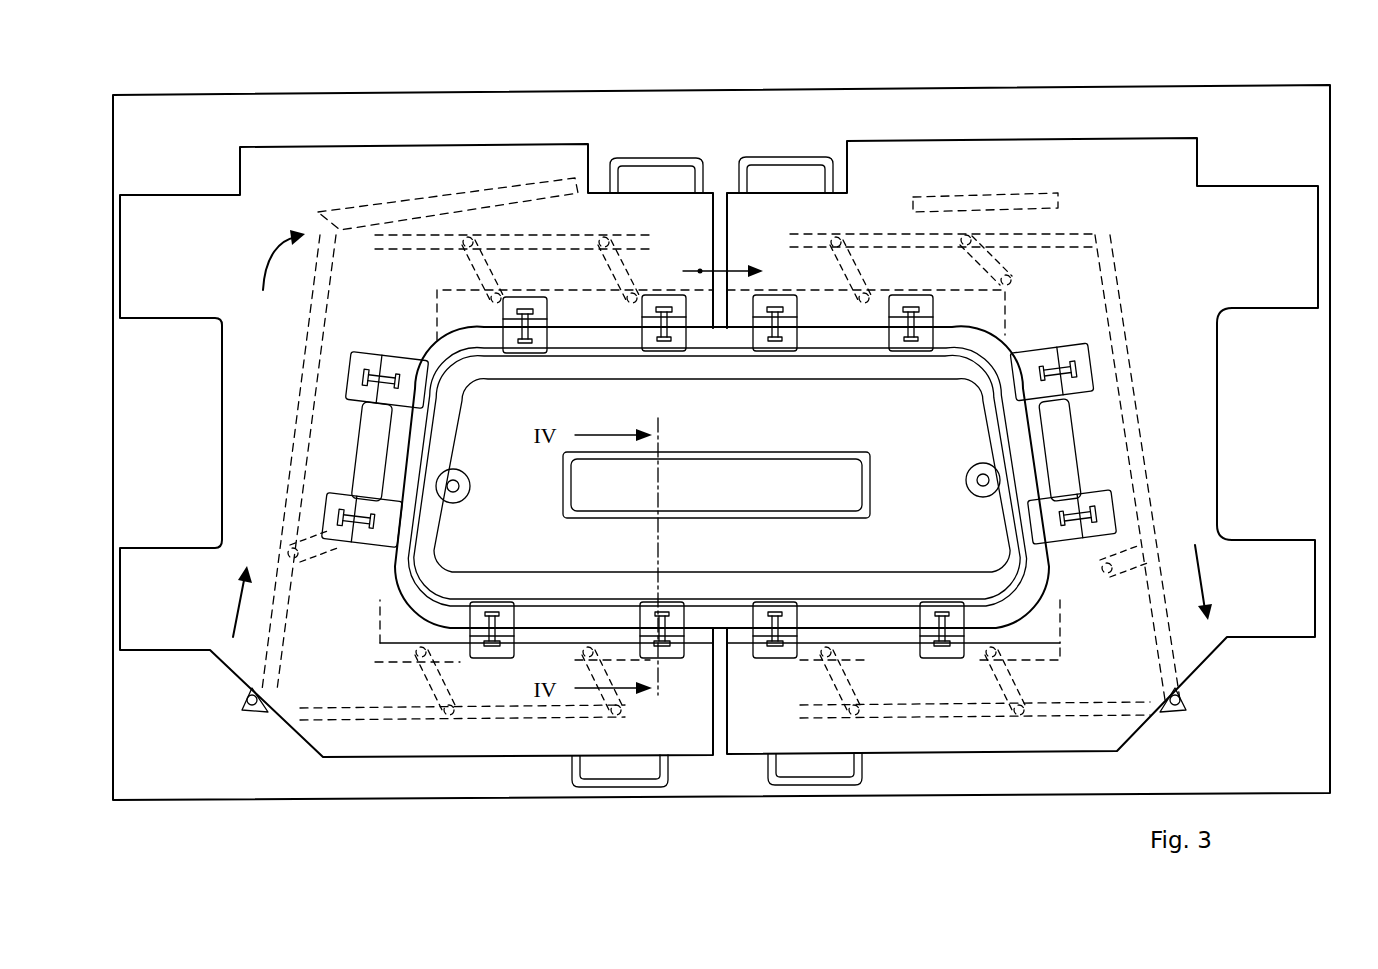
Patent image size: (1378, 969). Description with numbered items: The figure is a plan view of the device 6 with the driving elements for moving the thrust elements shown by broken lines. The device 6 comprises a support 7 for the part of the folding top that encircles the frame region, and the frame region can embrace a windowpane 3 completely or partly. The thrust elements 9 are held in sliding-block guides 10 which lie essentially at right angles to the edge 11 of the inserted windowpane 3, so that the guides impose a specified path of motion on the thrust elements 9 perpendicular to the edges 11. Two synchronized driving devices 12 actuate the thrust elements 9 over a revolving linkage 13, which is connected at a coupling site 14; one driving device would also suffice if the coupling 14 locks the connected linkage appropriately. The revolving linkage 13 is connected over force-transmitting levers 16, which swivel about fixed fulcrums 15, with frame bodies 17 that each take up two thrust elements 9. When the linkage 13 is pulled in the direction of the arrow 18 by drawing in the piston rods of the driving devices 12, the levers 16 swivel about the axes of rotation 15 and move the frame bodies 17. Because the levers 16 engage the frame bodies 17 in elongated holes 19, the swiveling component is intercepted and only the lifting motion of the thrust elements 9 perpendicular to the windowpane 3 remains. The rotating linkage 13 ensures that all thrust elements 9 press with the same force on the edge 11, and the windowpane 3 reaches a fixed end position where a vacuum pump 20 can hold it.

The windowpane 3 is at (912, 450).
The device 6 is at (1340, 210).
The support 7 is at (152, 142).
The thrust elements 9 is at (534, 347).
The sliding-block guides 10 is at (622, 303).
The edge 11 is at (723, 607).
The driving device 12 is at (483, 190).
The linkage 13 is at (535, 243).
The coupling site 14 is at (719, 166).
The fixed fulcrums 15 is at (500, 273).
The force-transmitting levers 16 is at (477, 262).
The frame bodies 17 is at (793, 200).
The arrow 18 is at (714, 222).
The elongated holes 19 is at (463, 312).
The vacuum pump 20 is at (771, 490).